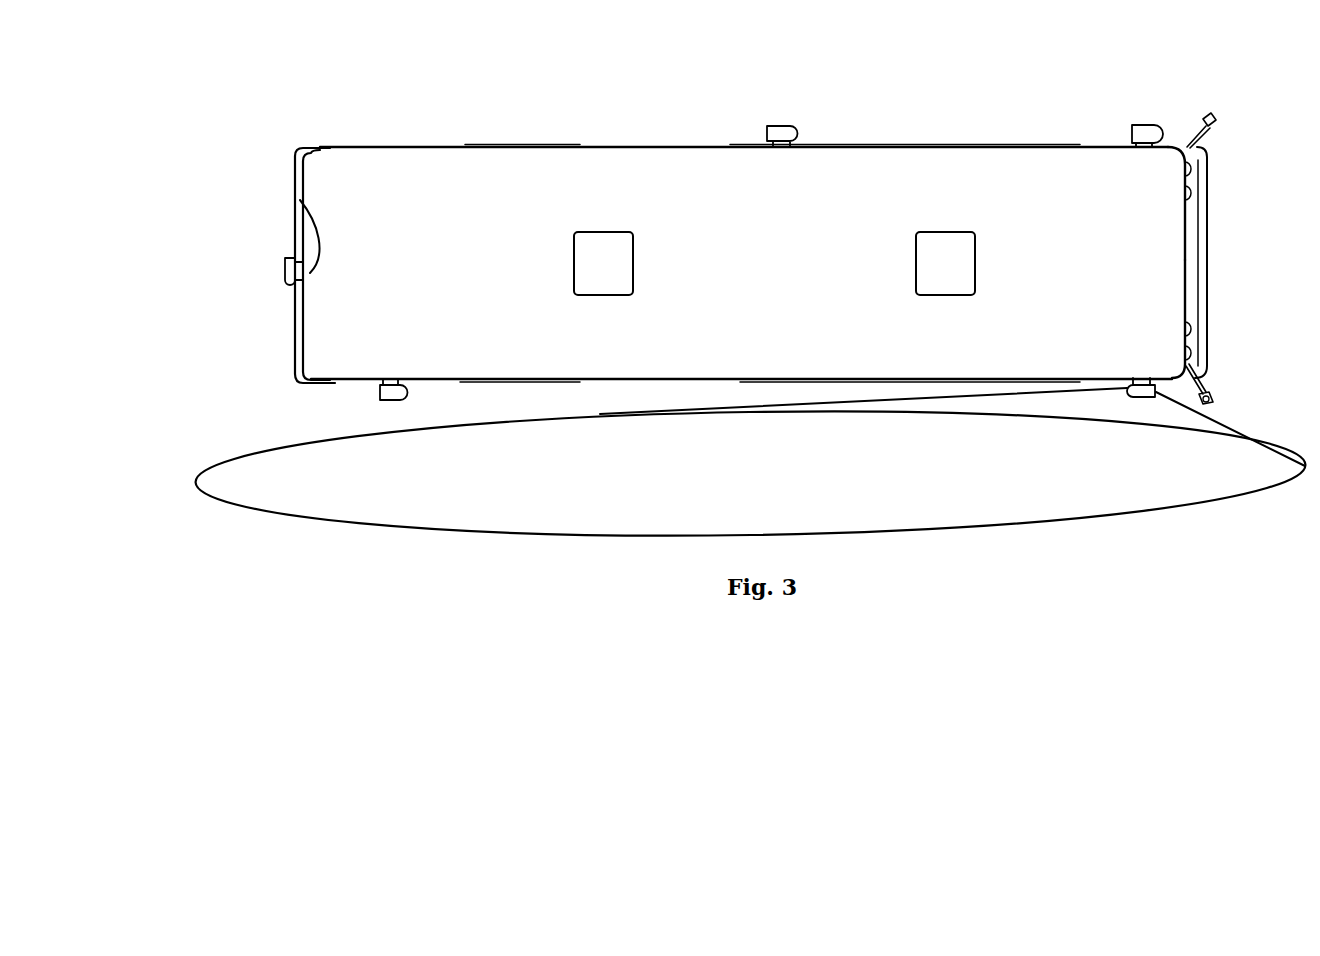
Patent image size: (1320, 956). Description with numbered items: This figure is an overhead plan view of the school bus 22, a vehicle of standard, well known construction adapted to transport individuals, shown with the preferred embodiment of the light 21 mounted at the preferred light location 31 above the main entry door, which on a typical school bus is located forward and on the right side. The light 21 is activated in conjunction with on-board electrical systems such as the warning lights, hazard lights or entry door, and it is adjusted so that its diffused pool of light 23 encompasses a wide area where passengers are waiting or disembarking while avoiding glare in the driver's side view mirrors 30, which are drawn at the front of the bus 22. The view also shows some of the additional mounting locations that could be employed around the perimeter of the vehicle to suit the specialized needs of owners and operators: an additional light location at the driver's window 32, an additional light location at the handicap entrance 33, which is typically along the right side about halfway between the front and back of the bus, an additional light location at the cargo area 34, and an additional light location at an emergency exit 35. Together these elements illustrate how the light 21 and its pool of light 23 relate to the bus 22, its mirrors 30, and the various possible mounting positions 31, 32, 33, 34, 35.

The light 21 is at (285, 259).
The school bus 22 is at (373, 168).
The pool of light 23 is at (1157, 500).
The driver's side view mirrors 30 is at (1213, 118).
The preferred embodiment of light location installed above the main entry door 31 is at (1155, 372).
The additional embodiment of light location (driver's window) 32 is at (1145, 153).
The additional embodiment of light location (handicap entrance) 33 is at (392, 372).
The additional embodiment of light location (cargo area) 34 is at (782, 157).
The additional embodiment of light location (emergency exit) 35 is at (300, 200).